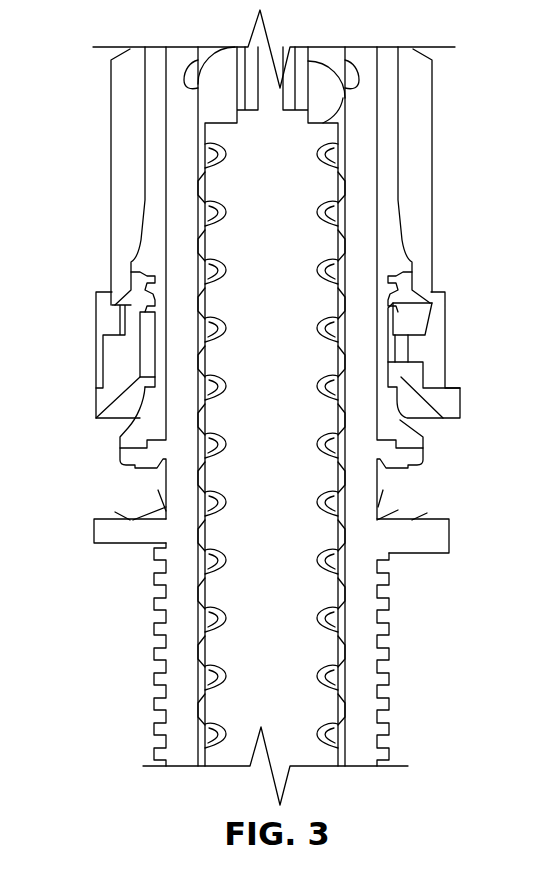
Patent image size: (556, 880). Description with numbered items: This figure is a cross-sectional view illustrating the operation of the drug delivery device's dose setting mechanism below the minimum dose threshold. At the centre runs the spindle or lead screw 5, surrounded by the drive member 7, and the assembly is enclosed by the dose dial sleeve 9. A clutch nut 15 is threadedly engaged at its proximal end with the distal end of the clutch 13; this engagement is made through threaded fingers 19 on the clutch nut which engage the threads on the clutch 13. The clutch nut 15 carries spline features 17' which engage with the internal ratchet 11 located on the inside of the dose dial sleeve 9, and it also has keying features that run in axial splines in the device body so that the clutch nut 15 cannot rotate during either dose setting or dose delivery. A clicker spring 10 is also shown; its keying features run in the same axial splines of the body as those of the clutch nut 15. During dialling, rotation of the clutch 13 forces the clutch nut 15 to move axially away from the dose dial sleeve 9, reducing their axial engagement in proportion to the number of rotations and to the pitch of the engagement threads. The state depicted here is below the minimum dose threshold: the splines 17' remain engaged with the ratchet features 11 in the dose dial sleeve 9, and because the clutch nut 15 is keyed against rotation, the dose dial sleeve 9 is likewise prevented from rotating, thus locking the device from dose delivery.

The spindle or lead screw 5 is at (287, 683).
The drive member 7 is at (373, 612).
The dose dial sleeve 9 is at (415, 200).
The clicker spring 10 is at (403, 515).
The internal ratchet 11 is at (130, 320).
The clutch 13 is at (402, 427).
The clutch nut 15 is at (423, 400).
The spline features 17' is at (455, 332).
The threaded fingers 19 is at (133, 271).